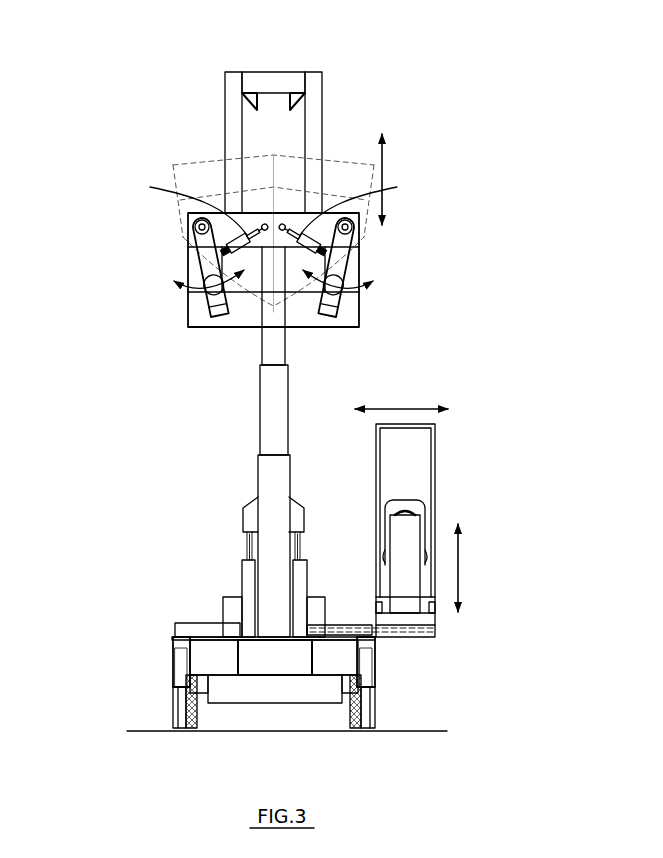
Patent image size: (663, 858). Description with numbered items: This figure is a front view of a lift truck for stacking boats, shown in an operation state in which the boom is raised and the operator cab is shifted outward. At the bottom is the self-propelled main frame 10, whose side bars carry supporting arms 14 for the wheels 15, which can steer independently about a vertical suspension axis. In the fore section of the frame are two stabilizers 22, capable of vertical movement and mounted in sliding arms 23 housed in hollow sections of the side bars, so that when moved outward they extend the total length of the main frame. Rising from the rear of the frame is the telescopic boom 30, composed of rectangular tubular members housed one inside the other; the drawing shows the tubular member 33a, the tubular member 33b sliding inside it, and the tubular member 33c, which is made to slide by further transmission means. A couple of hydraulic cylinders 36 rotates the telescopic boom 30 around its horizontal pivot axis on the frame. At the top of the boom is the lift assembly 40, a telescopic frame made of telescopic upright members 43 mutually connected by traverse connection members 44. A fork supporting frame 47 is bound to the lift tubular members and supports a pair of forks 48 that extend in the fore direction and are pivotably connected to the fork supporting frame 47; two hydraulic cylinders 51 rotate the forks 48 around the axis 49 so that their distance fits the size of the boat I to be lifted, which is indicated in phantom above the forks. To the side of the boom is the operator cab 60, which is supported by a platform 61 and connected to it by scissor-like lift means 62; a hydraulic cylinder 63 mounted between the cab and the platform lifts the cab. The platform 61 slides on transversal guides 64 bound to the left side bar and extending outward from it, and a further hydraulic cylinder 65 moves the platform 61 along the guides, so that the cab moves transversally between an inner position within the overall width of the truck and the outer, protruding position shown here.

The self-propelled main frame 10 is at (147, 620).
The supporting arms 14 is at (210, 628).
The wheels 15 is at (193, 718).
The stabilizers 22 is at (182, 705).
The sliding arms 23 is at (335, 662).
The telescopic boom 30 is at (218, 419).
The tubular member 33a is at (270, 490).
The tubular member 33b is at (283, 400).
The tubular member 33c is at (280, 345).
The hydraulic cylinders 36 is at (245, 568).
The lift assembly 40 is at (123, 153).
The telescopic upright members 43 is at (232, 110).
The traverse connection members 44 is at (275, 82).
The fork supporting frame 47 is at (220, 330).
The forks 48 is at (205, 295).
The axis 49 is at (188, 233).
The hydraulic cylinders 51 is at (220, 217).
The operator cab 60 is at (460, 462).
The platform 61 is at (420, 618).
The scissor-like lift means 62 is at (378, 605).
The hydraulic cylinder 63 is at (407, 612).
The transversal guides 64 is at (425, 634).
The hydraulic cylinder 65 is at (400, 630).
The boat I is at (200, 167).